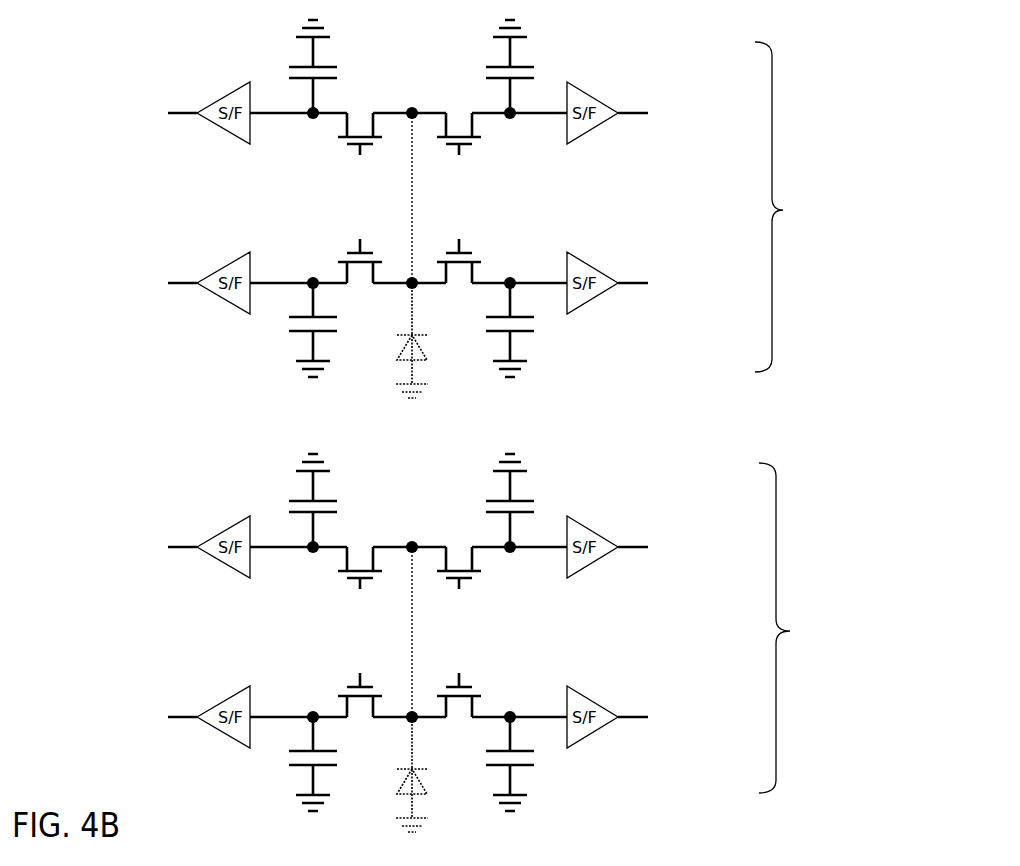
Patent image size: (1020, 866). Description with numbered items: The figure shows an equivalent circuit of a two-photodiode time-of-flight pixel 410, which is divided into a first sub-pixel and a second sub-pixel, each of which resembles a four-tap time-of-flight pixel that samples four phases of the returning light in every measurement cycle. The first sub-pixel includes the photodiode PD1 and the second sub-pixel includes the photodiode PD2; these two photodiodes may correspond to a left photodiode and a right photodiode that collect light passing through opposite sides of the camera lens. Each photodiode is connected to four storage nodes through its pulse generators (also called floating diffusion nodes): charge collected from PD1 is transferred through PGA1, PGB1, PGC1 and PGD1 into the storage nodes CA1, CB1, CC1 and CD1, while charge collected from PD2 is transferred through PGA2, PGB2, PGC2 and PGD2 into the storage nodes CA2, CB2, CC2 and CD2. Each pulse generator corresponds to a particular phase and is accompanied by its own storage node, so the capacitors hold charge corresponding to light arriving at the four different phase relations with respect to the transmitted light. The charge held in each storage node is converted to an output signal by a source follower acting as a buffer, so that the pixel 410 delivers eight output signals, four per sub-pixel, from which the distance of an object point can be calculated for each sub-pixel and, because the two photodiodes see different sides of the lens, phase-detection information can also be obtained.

The 2PD ToF pixel 410 is at (182, 38).
The photodiode of sub-pixel 1 PD1 is at (435, 340).
The photodiode of sub-pixel 2 PD2 is at (435, 774).
The pulse generator A of sub-pixel 1 PGA1 is at (356, 249).
The pulse generator B of sub-pixel 1 PGB1 is at (356, 151).
The pulse generator C of sub-pixel 1 PGC1 is at (463, 151).
The pulse generator D of sub-pixel 1 PGD1 is at (463, 249).
The pulse generator A of sub-pixel 2 PGA2 is at (356, 683).
The pulse generator B of sub-pixel 2 PGB2 is at (356, 585).
The pulse generator C of sub-pixel 2 PGC2 is at (463, 585).
The pulse generator D of sub-pixel 2 PGD2 is at (463, 683).
The storage node A of sub-pixel 1 CA1 is at (293, 330).
The storage node B of sub-pixel 1 CB1 is at (293, 66).
The storage node C of sub-pixel 1 CC1 is at (533, 66).
The storage node D of sub-pixel 1 CD1 is at (534, 330).
The storage node A of sub-pixel 2 CA2 is at (293, 764).
The storage node B of sub-pixel 2 CB2 is at (293, 500).
The storage node C of sub-pixel 2 CC2 is at (533, 500).
The storage node D of sub-pixel 2 CD2 is at (534, 764).